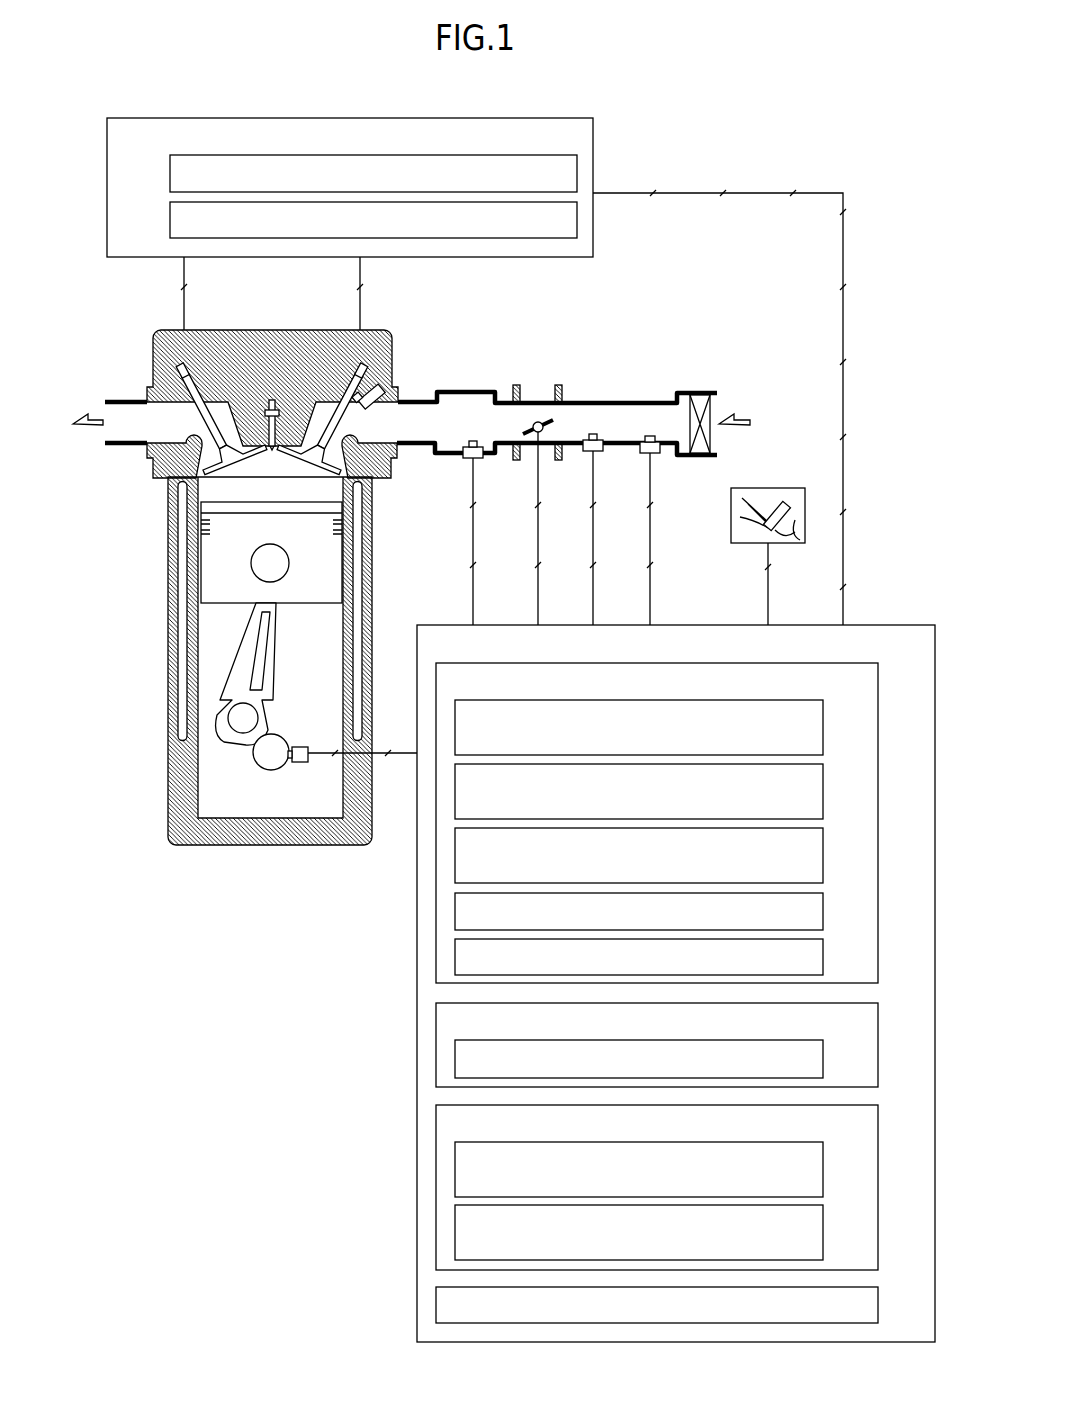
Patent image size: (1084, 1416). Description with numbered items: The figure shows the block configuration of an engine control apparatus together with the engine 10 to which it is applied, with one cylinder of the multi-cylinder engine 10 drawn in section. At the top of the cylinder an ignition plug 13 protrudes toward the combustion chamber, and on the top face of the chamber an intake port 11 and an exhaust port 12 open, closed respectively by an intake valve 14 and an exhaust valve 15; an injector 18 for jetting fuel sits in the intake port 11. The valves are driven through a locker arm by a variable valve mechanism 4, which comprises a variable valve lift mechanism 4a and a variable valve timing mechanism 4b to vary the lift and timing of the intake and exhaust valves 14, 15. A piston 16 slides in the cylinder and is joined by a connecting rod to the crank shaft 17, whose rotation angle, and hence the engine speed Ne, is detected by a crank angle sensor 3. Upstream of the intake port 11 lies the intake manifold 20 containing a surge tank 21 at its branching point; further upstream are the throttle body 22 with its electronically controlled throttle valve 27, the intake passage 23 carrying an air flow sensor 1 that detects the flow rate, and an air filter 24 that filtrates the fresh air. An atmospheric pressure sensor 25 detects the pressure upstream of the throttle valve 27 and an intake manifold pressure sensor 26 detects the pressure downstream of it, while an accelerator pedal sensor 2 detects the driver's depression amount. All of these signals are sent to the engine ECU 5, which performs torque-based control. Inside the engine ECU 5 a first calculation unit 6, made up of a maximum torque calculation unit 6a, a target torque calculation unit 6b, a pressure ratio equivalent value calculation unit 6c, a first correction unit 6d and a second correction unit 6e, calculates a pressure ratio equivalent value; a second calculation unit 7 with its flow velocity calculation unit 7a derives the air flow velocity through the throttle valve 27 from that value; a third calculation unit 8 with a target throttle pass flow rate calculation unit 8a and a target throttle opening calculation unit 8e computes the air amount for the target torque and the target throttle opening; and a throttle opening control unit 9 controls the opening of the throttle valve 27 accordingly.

The air flow sensor 1 is at (652, 454).
The accelerator pedal sensor 2 is at (768, 488).
The crank angle sensor 3 is at (308, 763).
The variable valve mechanism 4 is at (107, 139).
The variable valve lift mechanism 4a is at (170, 176).
The variable valve timing mechanism 4b is at (170, 221).
The engine ECU 5 is at (417, 625).
The first calculation unit 6 is at (880, 686).
The maximum torque calculation unit 6a is at (825, 730).
The target torque calculation unit 6b is at (825, 794).
The pressure ratio equivalent value calculation unit 6c is at (825, 858).
The first correction unit 6d is at (825, 912).
The second correction unit 6e is at (825, 958).
The second calculation unit 7 is at (880, 1022).
The flow velocity calculation unit 7a is at (825, 1060).
The third calculation unit 8 is at (880, 1155).
The target throttle pass flow rate calculation unit 8a is at (825, 1172).
The target throttle opening calculation unit 8e is at (825, 1235).
The throttle opening control unit 9 is at (880, 1308).
The engine 10 is at (680, 319).
The intake port 11 is at (382, 470).
The exhaust port 12 is at (162, 470).
The ignition plug 13 is at (271, 400).
The intake valve 14 is at (349, 384).
The exhaust valve 15 is at (210, 382).
The piston 16 is at (207, 567).
The crank shaft 17 is at (253, 760).
The injector 18 is at (372, 392).
The intake manifold 20 is at (434, 371).
The surge tank 21 is at (473, 390).
The throttle body 22 is at (538, 398).
The intake passage 23 is at (619, 400).
The air filter 24 is at (697, 398).
The atmospheric pressure sensor 25 is at (595, 453).
The intake manifold pressure sensor 26 is at (476, 458).
The throttle valve 27 is at (548, 432).